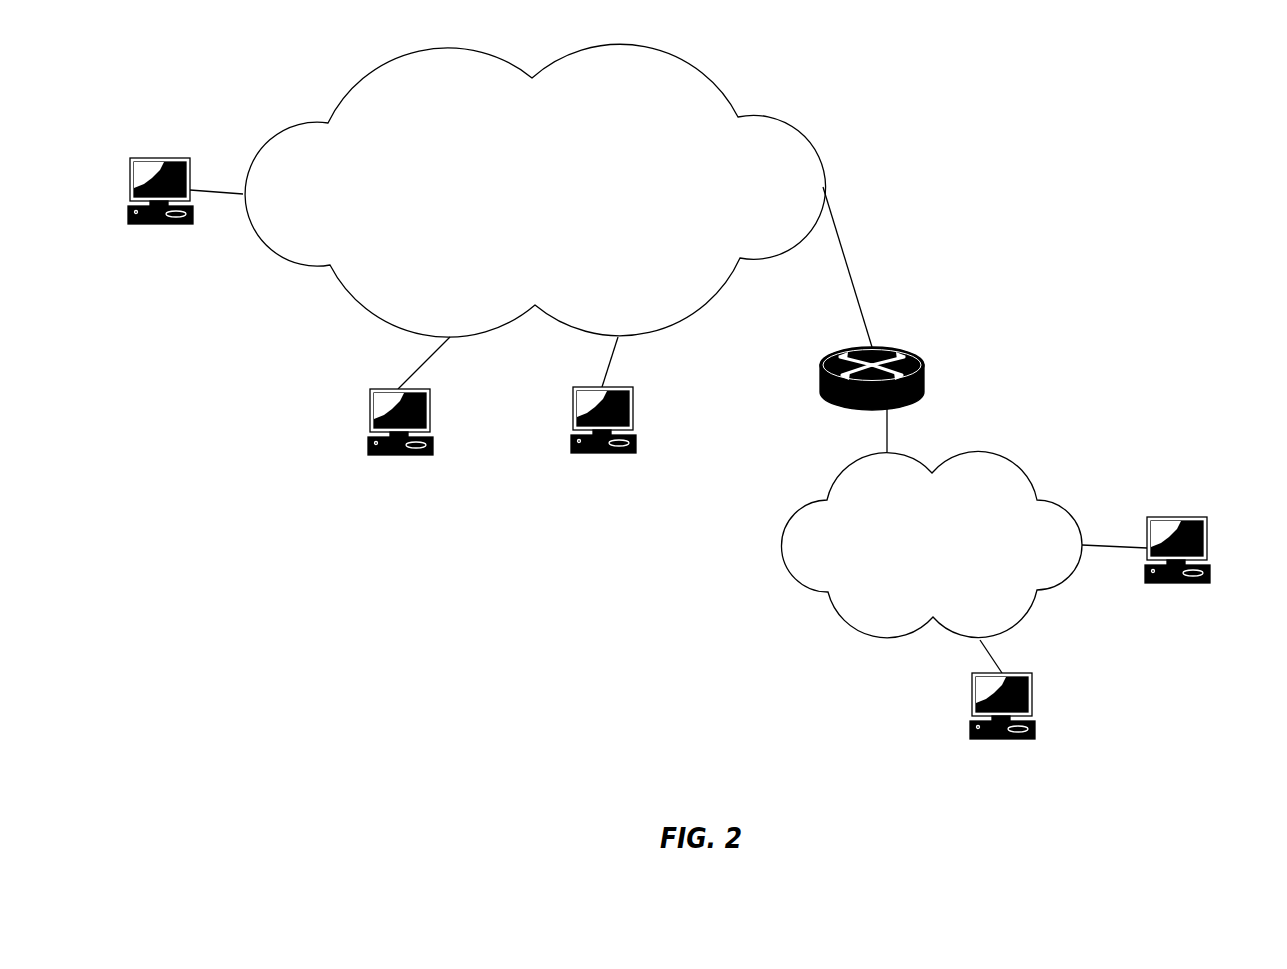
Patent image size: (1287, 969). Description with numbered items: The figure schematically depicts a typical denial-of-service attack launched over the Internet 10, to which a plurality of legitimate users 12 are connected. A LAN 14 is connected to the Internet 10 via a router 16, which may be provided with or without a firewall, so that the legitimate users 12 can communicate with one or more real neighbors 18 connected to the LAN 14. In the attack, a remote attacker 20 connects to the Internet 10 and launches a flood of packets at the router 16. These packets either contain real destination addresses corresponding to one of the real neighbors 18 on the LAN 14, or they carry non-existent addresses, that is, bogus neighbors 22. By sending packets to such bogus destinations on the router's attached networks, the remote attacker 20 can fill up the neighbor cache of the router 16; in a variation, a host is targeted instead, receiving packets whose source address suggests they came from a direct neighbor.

The Internet 10 is at (705, 73).
The legitimate users 12 is at (368, 423).
The LAN 14 is at (977, 450).
The router 16 is at (925, 378).
The real neighbors 18 is at (1177, 517).
The remote attacker 20 is at (160, 158).
The bogus neighbors 22 is at (1035, 707).